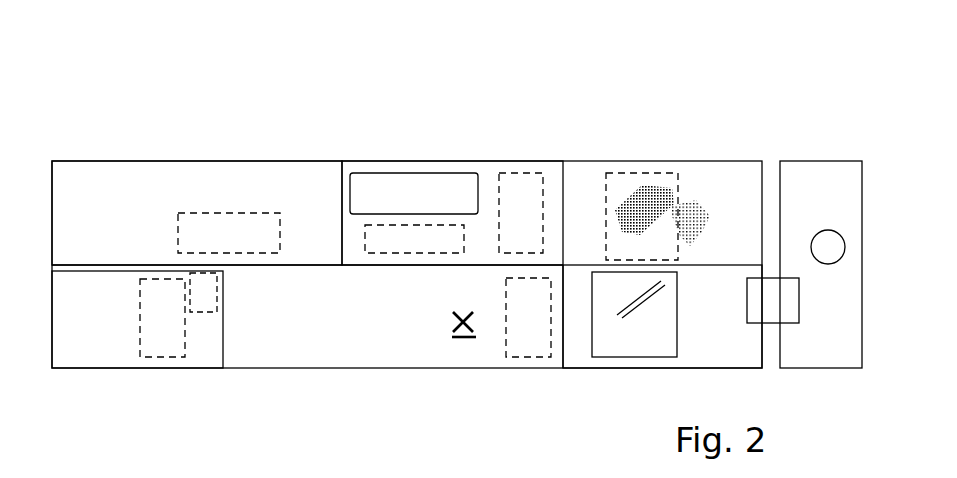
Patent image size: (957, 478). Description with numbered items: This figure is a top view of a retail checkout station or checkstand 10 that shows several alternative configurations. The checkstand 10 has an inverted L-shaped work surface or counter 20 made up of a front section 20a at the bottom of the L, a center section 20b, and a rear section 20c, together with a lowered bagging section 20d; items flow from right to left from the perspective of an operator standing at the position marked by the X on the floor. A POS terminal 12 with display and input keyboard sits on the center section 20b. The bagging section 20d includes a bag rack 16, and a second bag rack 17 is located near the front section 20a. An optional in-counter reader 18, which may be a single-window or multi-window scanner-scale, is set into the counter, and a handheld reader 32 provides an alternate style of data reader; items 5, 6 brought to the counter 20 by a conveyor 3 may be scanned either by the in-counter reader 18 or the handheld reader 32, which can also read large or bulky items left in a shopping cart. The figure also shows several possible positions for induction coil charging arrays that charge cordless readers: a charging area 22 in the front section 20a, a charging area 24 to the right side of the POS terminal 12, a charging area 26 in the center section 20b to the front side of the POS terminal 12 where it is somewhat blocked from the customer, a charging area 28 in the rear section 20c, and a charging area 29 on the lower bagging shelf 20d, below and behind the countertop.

The retail checkout station/checkstand 10 is at (495, 82).
The work surface/counter 20 is at (573, 178).
The counter first/front section 20a is at (718, 342).
The counter center section 20b is at (337, 173).
The counter rear section 20c is at (102, 188).
The lowered counter section or bagging section 20d is at (110, 343).
The POS terminal 12 is at (393, 185).
The charging area 26 is at (378, 240).
The charging area 24 is at (525, 244).
The charging area 28 is at (250, 237).
The charging area/array 22 is at (620, 178).
The handheld reader 32 is at (688, 212).
The bag rack 16 is at (167, 335).
The charging area 29 is at (203, 298).
The second bag rack 17 is at (521, 342).
The in-counter reader 18 is at (653, 328).
The conveyor 3 is at (797, 172).
The item 5 is at (821, 231).
The item 6 is at (780, 292).